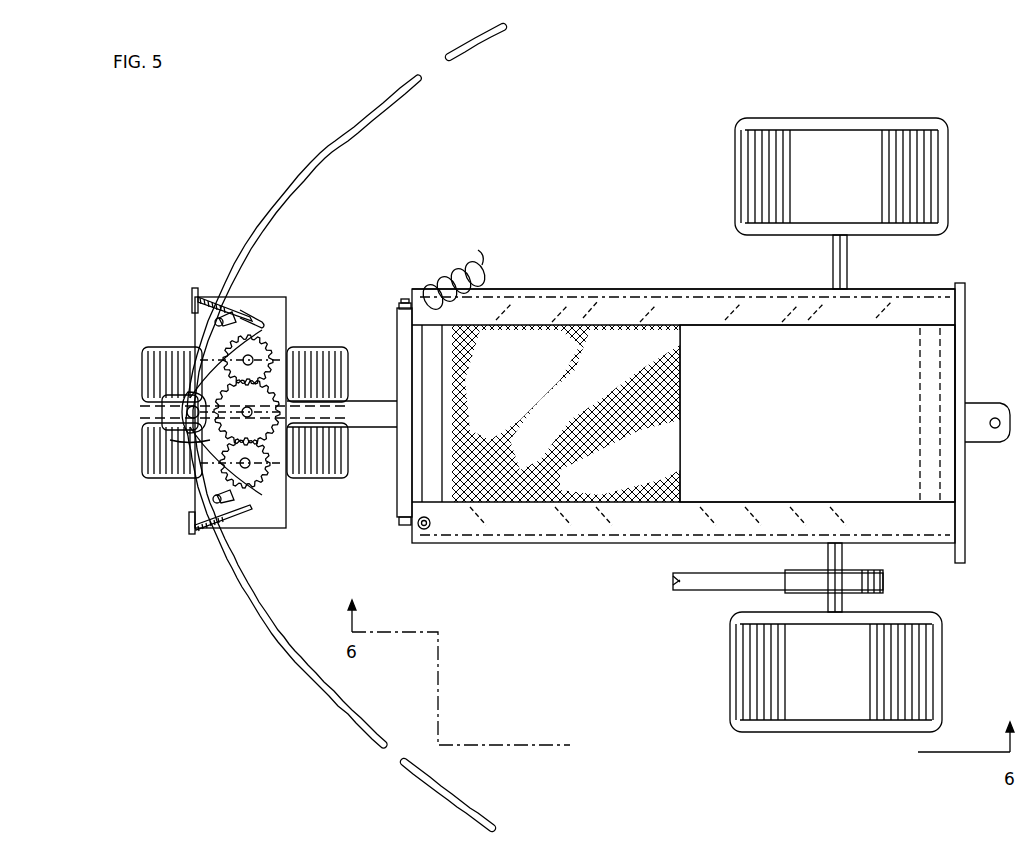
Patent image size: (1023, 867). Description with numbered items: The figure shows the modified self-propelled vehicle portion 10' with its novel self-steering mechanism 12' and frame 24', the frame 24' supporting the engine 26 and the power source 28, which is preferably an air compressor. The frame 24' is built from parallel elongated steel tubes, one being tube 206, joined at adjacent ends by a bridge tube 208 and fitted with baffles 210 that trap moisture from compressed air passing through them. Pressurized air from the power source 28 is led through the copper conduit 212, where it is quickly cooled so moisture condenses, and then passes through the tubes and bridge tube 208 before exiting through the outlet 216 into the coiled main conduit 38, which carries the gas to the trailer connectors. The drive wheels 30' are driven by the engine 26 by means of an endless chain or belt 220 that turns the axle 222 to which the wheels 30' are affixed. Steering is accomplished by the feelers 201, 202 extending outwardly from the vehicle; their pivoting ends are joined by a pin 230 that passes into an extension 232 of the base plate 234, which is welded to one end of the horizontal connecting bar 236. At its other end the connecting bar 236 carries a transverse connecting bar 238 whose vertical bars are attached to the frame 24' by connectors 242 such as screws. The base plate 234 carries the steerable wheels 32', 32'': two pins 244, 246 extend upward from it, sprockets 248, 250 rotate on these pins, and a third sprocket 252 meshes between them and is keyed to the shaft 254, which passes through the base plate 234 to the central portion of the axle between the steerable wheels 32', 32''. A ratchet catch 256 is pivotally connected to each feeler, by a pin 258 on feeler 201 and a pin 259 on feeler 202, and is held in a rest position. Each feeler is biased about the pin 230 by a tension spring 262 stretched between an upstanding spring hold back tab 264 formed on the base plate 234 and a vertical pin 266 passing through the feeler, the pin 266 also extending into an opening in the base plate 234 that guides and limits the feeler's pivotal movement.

The self-propelled vehicle portion 10' is at (787, 463).
The self-steering mechanism 12' is at (129, 257).
The frame 24' is at (683, 380).
The engine 26 is at (817, 413).
The power source 28 is at (566, 413).
The wheels 30' is at (806, 404).
The steerable wheel 32' is at (205, 459).
The steerable wheel 32'' is at (209, 374).
The main conduit 38 is at (466, 268).
The feeler 201 is at (312, 163).
The feeler 202 is at (303, 668).
The elongated steel tube 206 is at (730, 289).
The bridge tube 208 is at (918, 441).
The baffles 210 is at (584, 300).
The copper conduit 212 is at (430, 530).
The outlet 216 is at (406, 302).
The endless chain or belt 220 is at (692, 584).
The axle 222 is at (848, 275).
The pin 230 is at (205, 428).
The extension 232 is at (185, 410).
The base plate 234 is at (286, 522).
The horizontal connecting bar 236 is at (372, 432).
The connecting bar 238 is at (397, 338).
The connectors 242 is at (404, 527).
The pin 244 is at (268, 300).
The pin 246 is at (262, 505).
The sprocket 248 is at (260, 350).
The sprocket 250 is at (256, 475).
The third sprocket 252 is at (185, 446).
The shaft 254 is at (190, 398).
The ratchet catch 256 is at (222, 344).
The pin 258 is at (214, 321).
The pin 259 is at (214, 503).
The tension spring 262 is at (214, 295).
The spring hold back tab 264 is at (194, 290).
The pin 266 is at (245, 306).